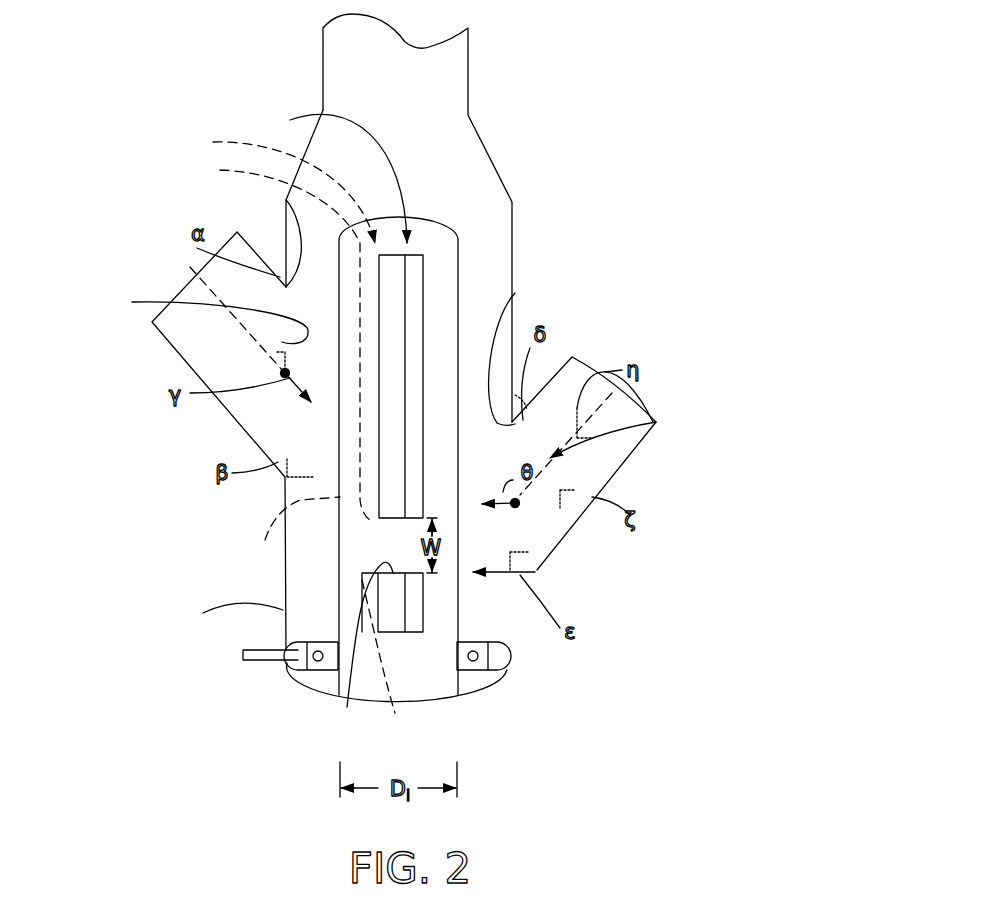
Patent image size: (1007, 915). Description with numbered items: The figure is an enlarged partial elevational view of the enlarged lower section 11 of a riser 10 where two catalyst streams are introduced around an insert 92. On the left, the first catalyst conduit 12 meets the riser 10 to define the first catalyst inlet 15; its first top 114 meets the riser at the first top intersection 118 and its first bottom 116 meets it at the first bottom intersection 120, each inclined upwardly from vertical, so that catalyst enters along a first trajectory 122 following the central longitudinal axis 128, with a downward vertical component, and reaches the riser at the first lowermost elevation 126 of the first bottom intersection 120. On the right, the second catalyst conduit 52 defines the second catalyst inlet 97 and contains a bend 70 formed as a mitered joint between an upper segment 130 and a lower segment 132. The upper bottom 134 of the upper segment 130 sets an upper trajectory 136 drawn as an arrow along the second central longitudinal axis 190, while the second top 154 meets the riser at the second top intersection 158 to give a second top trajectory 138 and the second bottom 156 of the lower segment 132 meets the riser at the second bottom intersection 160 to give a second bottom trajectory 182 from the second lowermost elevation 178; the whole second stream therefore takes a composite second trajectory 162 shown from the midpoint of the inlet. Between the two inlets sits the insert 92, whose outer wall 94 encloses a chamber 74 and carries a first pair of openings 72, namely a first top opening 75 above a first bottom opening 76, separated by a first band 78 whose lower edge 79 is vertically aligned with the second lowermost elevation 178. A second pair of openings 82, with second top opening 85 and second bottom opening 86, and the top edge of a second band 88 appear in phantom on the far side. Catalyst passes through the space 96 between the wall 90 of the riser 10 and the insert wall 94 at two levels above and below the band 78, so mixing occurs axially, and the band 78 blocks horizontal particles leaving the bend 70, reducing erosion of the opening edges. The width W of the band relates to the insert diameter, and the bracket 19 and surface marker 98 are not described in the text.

The riser 10 is at (625, 186).
The enlarged lower section 11 is at (513, 227).
The first catalyst conduit 12 is at (173, 348).
The first catalyst inlet 15 is at (202, 317).
The mounting bracket 19 is at (327, 672).
The second catalyst conduit 52 is at (612, 485).
The bend 70 is at (535, 572).
The first pair of openings 72 is at (331, 175).
The chamber 74 is at (418, 302).
The first top opening 75 is at (458, 238).
The first bottom opening 76 is at (413, 620).
The first band 78 is at (402, 545).
The lower edge 79 is at (362, 650).
The second pair of openings 82 is at (281, 186).
The second top opening 85 is at (282, 339).
The second bottom opening 86 is at (395, 656).
The second band 88 is at (292, 529).
The wall 90 is at (312, 615).
The insert 92 is at (458, 285).
The outer wall 94 is at (340, 597).
The space 96 is at (242, 655).
The second catalyst inlet 97 is at (500, 530).
The fin surface 98 is at (280, 435).
The first top 114 is at (243, 233).
The first bottom 116 is at (335, 448).
The first top intersection 118 is at (285, 200).
The first bottom intersection 120 is at (287, 478).
The first trajectory 122 is at (283, 395).
The first lowermost elevation 126 is at (287, 490).
The central longitudinal axis 128 is at (230, 357).
The upper segment 130 is at (612, 480).
The lower segment 132 is at (527, 573).
The upper bottom 134 is at (610, 482).
The upper trajectory 136 is at (655, 420).
The second top trajectory 138 is at (570, 418).
The second top 154 is at (545, 385).
The second bottom 156 is at (515, 572).
The second top intersection 158 is at (515, 300).
The second bottom intersection 160 is at (510, 572).
The second trajectory 162 is at (515, 503).
The second lowermost elevation 178 is at (503, 572).
The second bottom trajectory 182 is at (495, 572).
The second central longitudinal axis 190 is at (598, 410).